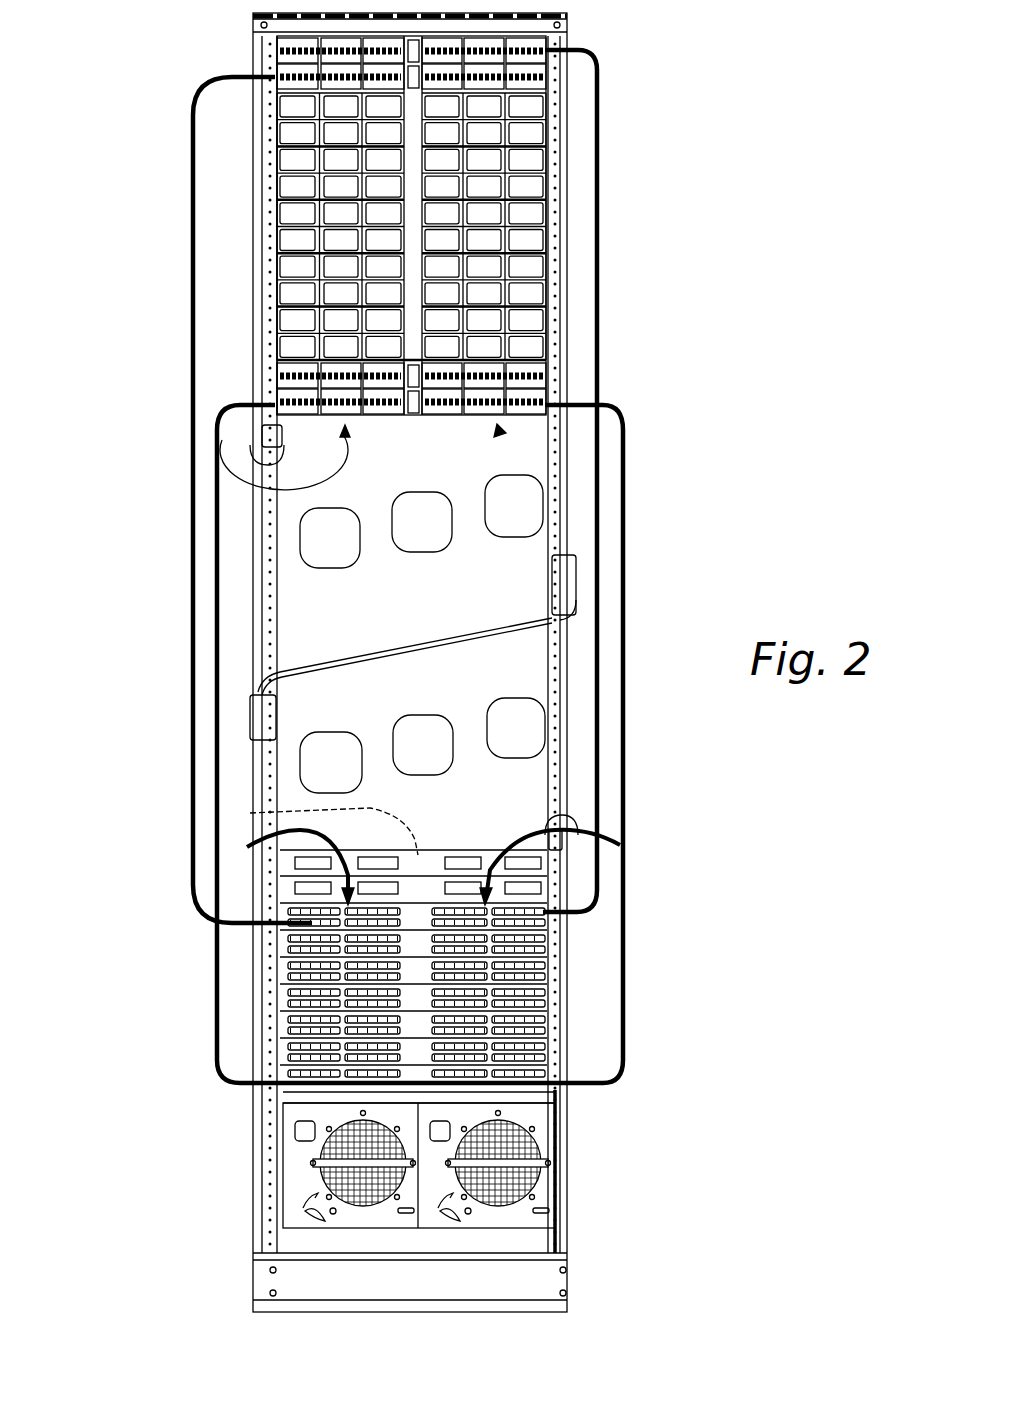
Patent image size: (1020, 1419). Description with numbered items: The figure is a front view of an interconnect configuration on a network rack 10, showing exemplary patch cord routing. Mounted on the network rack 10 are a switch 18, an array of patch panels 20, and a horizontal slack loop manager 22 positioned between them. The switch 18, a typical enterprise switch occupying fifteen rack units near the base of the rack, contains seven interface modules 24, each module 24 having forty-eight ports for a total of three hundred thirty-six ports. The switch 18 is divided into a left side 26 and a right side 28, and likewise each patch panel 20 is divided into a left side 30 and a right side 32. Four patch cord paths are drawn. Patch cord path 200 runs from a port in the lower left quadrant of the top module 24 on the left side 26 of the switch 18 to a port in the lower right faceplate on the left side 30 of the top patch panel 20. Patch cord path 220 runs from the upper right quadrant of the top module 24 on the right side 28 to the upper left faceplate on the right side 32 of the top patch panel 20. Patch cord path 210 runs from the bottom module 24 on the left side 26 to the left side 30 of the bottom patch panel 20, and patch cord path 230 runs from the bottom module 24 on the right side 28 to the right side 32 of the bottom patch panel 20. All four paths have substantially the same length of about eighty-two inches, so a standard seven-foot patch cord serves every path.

The network rack 10 is at (258, 1117).
The switch 18 is at (300, 1170).
The patch panel 20 is at (418, 420).
The horizontal slack loop manager 22 is at (172, 480).
The interface module 24 is at (250, 813).
The left side of switch 26 is at (247, 847).
The right side of switch 28 is at (620, 845).
The left side of patch panel 30 is at (250, 455).
The right side of patch panel 32 is at (500, 430).
The patch cord path 200 is at (207, 903).
The patch cord path 210 is at (217, 1035).
The patch cord path 220 is at (598, 915).
The patch cord path 230 is at (617, 1088).